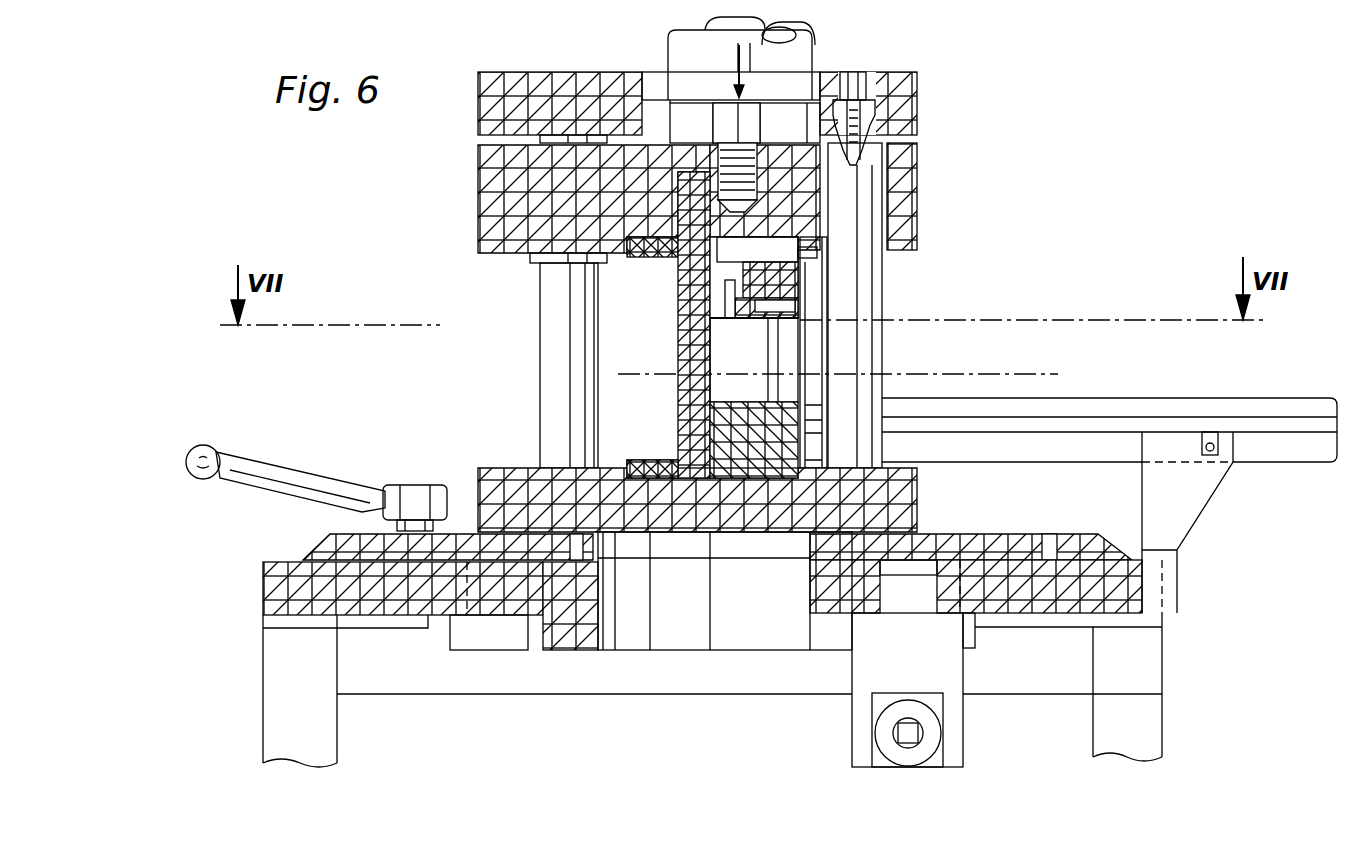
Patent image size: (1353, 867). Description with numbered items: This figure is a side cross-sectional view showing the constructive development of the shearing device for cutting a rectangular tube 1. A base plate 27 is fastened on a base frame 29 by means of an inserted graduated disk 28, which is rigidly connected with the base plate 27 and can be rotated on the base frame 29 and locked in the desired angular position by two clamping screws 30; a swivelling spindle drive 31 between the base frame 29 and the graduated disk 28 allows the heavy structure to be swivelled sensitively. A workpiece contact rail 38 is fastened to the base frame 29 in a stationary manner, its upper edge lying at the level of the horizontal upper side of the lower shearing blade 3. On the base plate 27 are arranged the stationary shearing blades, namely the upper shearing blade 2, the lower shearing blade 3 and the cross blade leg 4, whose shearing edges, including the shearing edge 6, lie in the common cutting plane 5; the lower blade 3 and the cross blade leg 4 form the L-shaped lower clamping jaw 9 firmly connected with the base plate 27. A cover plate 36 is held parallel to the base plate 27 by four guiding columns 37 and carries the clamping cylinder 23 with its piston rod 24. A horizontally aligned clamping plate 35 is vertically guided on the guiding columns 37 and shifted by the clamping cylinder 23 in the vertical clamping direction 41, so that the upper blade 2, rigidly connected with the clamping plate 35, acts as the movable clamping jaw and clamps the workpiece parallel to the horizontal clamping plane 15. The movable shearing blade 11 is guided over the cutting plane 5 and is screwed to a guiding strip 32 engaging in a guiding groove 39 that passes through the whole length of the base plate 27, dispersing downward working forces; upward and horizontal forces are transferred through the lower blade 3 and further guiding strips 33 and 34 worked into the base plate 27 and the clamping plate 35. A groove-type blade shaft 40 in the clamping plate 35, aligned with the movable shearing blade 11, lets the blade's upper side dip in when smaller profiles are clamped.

The rectangular tube 1 is at (1002, 320).
The upper shearing blade 2 is at (782, 273).
The lower shearing blade 3 is at (720, 440).
The cross blade leg 4 is at (752, 360).
The cutting plane 5 is at (708, 400).
The shearing edge 6 is at (753, 359).
The lower clamping jaw 9 is at (784, 490).
The movable shearing blade 11 is at (693, 297).
The clamping plane 15 is at (636, 368).
The clamping cylinder 23 is at (812, 55).
The piston rod 24 is at (718, 118).
The base plate 27 is at (530, 483).
The graduated disk 28 is at (328, 553).
The base frame 29 is at (280, 595).
The clamping screws 30 is at (405, 527).
The swivelling spindle drive 31 is at (952, 700).
The guiding strip 32 is at (712, 482).
The guiding strip 33 is at (650, 465).
The guiding strip 34 is at (635, 257).
The clamping plate 35 is at (498, 198).
The cover plate 36 is at (528, 100).
The guiding columns 37 is at (557, 316).
The workpiece contact rail 38 is at (1210, 408).
The guiding groove 39 is at (735, 478).
The groove-type blade shaft 40 is at (704, 216).
The clamping direction 41 is at (736, 55).